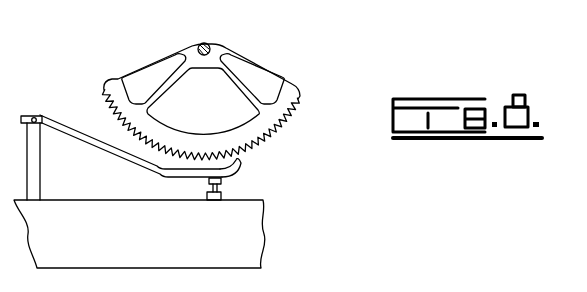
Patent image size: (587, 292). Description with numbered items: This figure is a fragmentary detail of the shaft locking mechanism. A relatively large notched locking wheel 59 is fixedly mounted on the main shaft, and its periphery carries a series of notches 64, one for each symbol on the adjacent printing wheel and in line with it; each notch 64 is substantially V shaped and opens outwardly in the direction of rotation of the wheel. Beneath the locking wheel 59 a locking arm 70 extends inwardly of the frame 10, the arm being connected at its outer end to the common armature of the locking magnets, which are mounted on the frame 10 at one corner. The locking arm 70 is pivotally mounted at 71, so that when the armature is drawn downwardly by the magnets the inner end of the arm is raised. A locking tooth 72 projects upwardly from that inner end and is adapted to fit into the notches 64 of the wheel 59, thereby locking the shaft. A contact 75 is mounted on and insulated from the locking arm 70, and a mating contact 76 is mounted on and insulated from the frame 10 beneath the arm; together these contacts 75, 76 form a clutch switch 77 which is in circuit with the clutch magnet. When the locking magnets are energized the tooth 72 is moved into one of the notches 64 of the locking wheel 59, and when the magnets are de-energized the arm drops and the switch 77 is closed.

The frame 10 is at (70, 258).
The notched locking wheel 59 is at (291, 88).
The notch 64 is at (299, 106).
The locking arm 70 is at (66, 128).
The pivot 71 is at (34, 117).
The locking tooth 72 is at (236, 158).
The contact 75 is at (222, 182).
The contact 76 is at (208, 194).
The clutch switch 77 is at (220, 190).